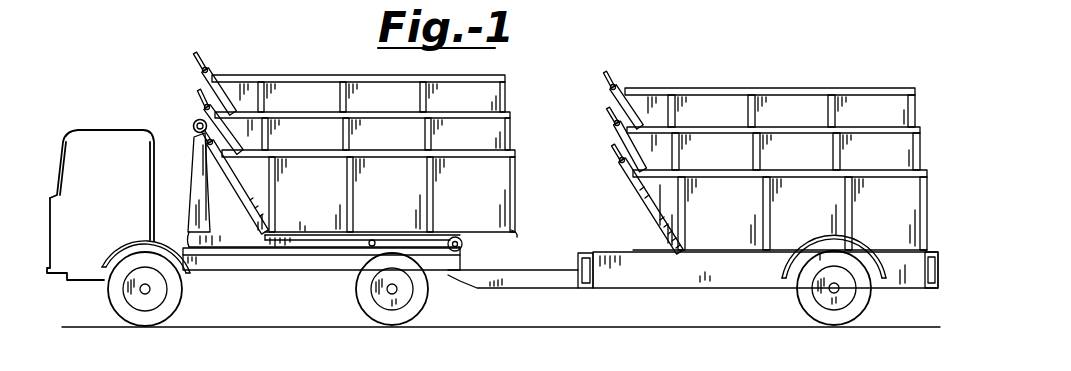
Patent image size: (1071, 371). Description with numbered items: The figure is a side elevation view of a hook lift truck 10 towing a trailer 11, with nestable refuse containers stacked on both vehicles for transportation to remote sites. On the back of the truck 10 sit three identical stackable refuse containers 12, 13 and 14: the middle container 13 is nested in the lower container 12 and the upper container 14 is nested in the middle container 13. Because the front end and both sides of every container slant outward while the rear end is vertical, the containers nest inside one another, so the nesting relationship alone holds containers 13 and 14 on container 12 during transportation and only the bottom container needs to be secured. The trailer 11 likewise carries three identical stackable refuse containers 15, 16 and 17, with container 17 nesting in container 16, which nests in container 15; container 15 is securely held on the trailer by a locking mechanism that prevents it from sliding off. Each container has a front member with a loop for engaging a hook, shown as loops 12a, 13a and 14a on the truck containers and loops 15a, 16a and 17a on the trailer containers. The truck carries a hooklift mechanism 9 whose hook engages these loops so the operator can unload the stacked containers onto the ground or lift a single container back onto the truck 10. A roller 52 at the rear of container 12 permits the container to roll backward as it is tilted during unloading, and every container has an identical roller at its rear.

The truck hooklift mechanism 9 is at (190, 184).
The hook lift truck 10 is at (129, 121).
The trailer 11 is at (929, 250).
The lower stackable refuse container 12 is at (518, 208).
The loop 12a is at (196, 122).
The middle stackable refuse container 13 is at (512, 140).
The loop 13a is at (201, 92).
The upper stackable refuse container 14 is at (508, 90).
The loop 14a is at (200, 52).
The trailer lower stackable refuse container 15 is at (929, 218).
The loop 15a is at (613, 160).
The trailer middle stackable refuse container 16 is at (921, 140).
The loop 16a is at (608, 122).
The trailer upper stackable refuse container 17 is at (917, 94).
The loop 17a is at (606, 74).
The roller 52 is at (514, 239).